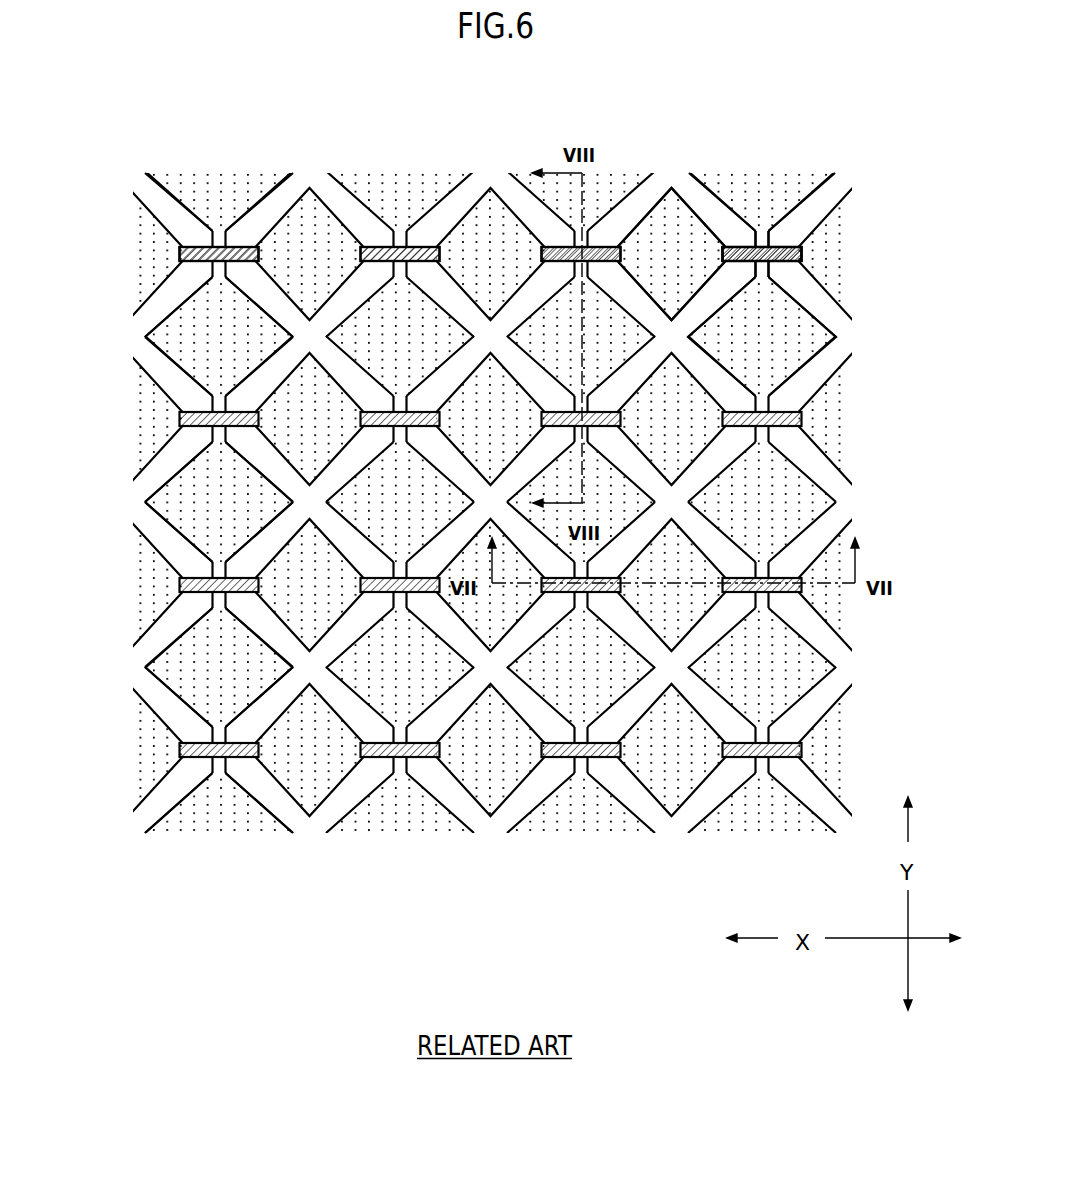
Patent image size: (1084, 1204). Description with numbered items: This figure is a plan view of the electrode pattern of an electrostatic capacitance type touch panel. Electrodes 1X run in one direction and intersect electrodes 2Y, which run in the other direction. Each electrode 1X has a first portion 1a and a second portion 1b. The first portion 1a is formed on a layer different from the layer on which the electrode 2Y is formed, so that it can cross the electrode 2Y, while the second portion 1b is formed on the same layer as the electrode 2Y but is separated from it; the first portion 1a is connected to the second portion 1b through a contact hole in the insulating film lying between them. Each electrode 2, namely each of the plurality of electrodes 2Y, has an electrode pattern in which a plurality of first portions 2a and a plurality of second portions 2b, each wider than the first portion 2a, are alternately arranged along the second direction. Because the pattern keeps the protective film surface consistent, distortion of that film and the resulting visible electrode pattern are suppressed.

The electrode 1X is at (830, 253).
The first portion 1a is at (749, 245).
The second portion 1b is at (672, 218).
The electrode 2 is at (760, 183).
The electrode 2Y is at (220, 182).
The first portion 2a is at (767, 240).
The second portion 2b is at (788, 182).